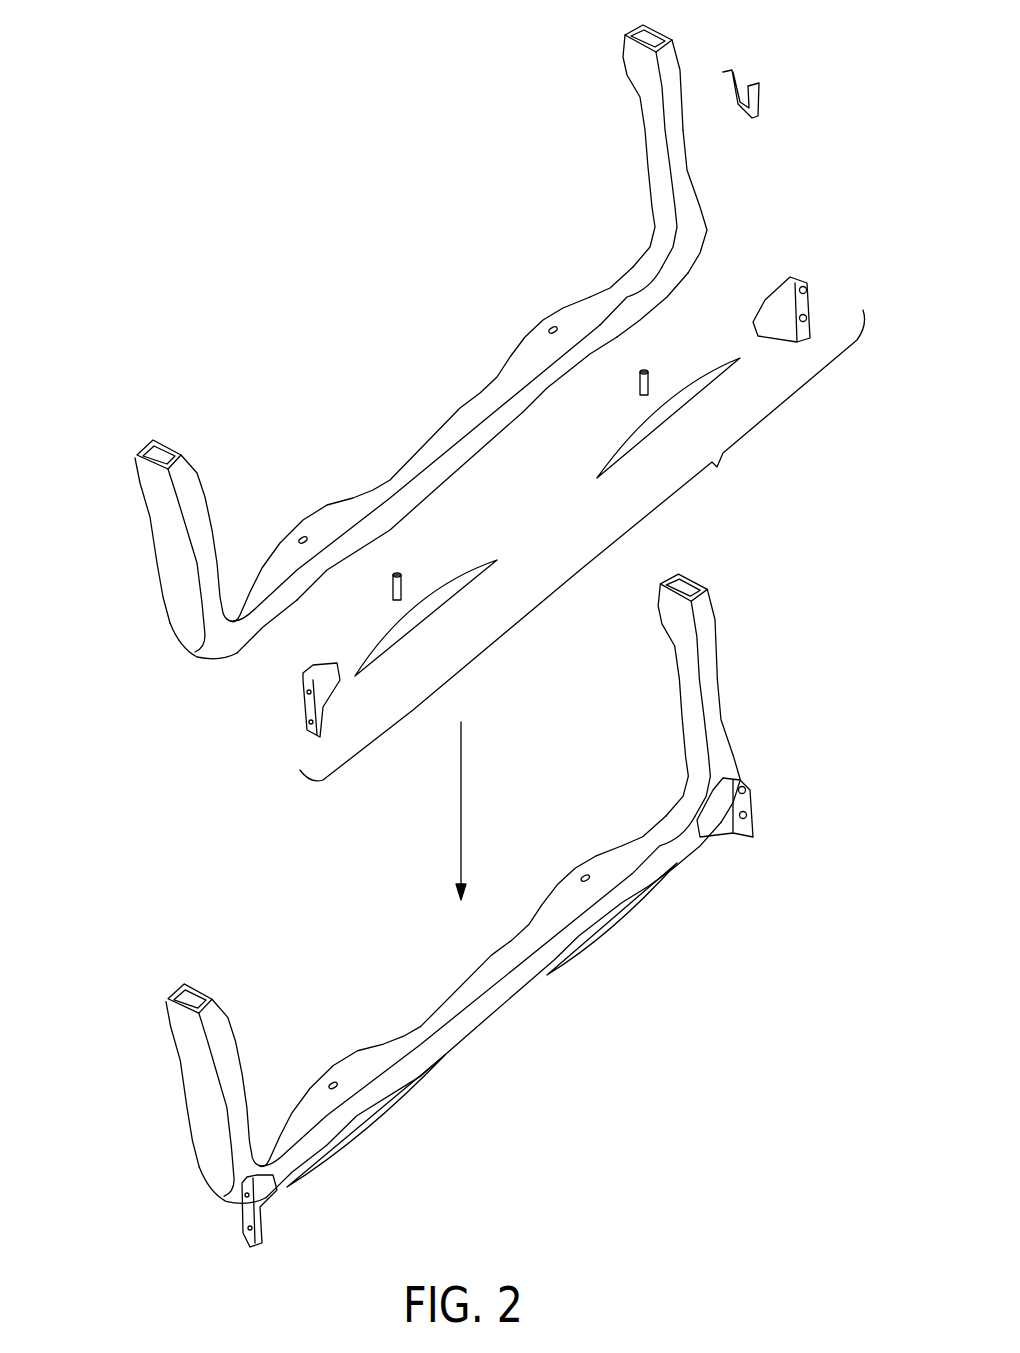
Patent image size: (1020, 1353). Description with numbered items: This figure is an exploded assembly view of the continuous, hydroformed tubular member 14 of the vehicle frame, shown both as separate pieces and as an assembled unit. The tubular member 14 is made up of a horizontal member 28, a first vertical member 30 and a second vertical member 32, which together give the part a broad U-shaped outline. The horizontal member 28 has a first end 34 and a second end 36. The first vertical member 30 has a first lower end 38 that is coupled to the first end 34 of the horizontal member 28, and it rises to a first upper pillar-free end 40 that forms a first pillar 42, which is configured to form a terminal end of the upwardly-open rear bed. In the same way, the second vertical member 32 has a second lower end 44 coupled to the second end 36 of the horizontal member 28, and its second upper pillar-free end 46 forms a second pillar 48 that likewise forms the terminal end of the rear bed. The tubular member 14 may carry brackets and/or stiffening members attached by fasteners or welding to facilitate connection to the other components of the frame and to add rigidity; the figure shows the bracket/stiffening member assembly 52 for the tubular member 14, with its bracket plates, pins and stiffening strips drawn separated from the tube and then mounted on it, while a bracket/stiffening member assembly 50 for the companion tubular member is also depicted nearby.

The tubular member 14 is at (378, 176).
The horizontal member 28 is at (437, 440).
The first vertical member 30 is at (687, 168).
The second vertical member 32 is at (168, 560).
The first end 34 is at (672, 285).
The second end 36 is at (247, 643).
The first lower end 38 is at (700, 230).
The first upper pillar-free end 40 is at (677, 58).
The first pillar 42 is at (648, 138).
The second lower end 44 is at (205, 640).
The second upper pillar-free end 46 is at (153, 482).
The second pillar 48 is at (200, 513).
The bracket/stiffening member assembly 50 is at (773, 90).
The bracket/stiffening member assembly 52 is at (720, 468).